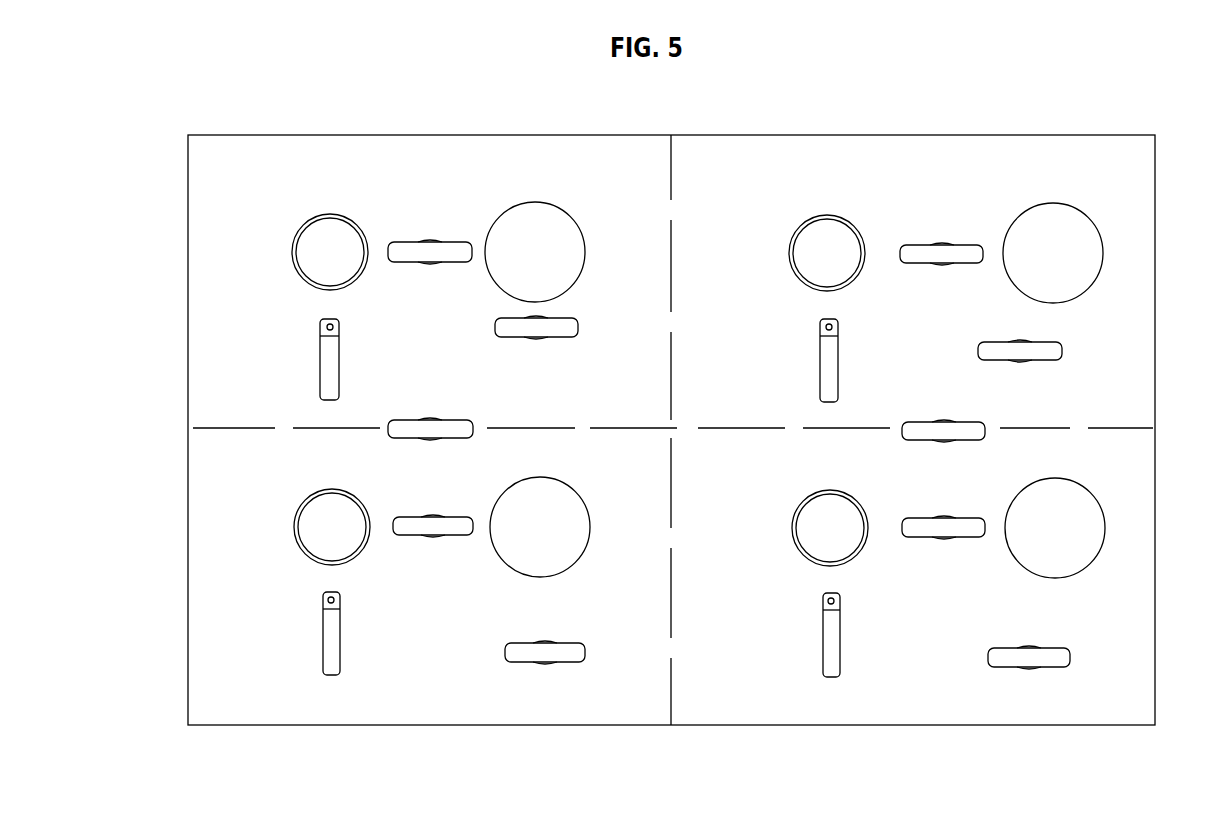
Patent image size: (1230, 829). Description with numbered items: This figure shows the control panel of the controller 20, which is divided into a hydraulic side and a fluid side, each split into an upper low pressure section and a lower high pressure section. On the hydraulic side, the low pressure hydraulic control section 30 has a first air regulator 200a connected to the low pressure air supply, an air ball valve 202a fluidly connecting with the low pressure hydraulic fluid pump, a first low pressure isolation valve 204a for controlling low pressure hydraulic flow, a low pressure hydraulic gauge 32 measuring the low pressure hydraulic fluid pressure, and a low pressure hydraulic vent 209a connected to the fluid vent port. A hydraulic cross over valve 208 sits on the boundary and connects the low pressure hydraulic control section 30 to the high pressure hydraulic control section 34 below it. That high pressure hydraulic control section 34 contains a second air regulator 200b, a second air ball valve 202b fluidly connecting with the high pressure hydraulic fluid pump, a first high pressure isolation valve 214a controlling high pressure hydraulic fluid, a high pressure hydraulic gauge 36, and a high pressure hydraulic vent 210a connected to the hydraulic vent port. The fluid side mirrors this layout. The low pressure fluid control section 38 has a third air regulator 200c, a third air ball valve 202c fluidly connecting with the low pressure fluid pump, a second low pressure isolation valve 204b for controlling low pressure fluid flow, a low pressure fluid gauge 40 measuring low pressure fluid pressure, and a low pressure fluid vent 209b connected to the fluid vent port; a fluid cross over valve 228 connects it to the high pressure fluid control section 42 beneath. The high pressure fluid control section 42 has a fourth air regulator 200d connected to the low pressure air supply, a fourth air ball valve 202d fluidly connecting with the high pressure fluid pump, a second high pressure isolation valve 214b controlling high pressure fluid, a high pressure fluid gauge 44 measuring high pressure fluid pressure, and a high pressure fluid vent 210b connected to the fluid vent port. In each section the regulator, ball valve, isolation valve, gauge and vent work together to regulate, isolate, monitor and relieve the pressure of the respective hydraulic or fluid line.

The controller 20 is at (412, 118).
The low pressure hydraulic control section 30 is at (186, 197).
The high pressure hydraulic control section 34 is at (188, 532).
The low pressure fluid control section 38 is at (1158, 193).
The high pressure fluid control section 42 is at (1163, 531).
The low pressure hydraulic gauge 32 is at (556, 222).
The high pressure hydraulic gauge 36 is at (578, 502).
The low pressure fluid gauge 40 is at (1056, 222).
The high pressure fluid gauge 44 is at (1077, 503).
The first air regulator 200a is at (308, 272).
The second air regulator 200b is at (312, 550).
The third air regulator 200c is at (806, 272).
The fourth air regulator 200d is at (812, 552).
The air ball valve 202a is at (328, 362).
The second air ball valve 202b is at (328, 645).
The third air ball valve 202c is at (828, 365).
The fourth air ball valve 202d is at (830, 647).
The first low pressure isolation valve 204a is at (400, 253).
The second low pressure isolation valve 204b is at (915, 250).
The first high pressure isolation valve 214a is at (454, 517).
The second high pressure isolation valve 214b is at (952, 518).
The low pressure hydraulic vent 209a is at (520, 333).
The low pressure fluid vent 209b is at (1055, 345).
The high pressure hydraulic vent 210a is at (565, 645).
The high pressure fluid vent 210b is at (1060, 650).
The hydraulic cross over valve 208 is at (405, 426).
The fluid cross over valve 228 is at (922, 428).